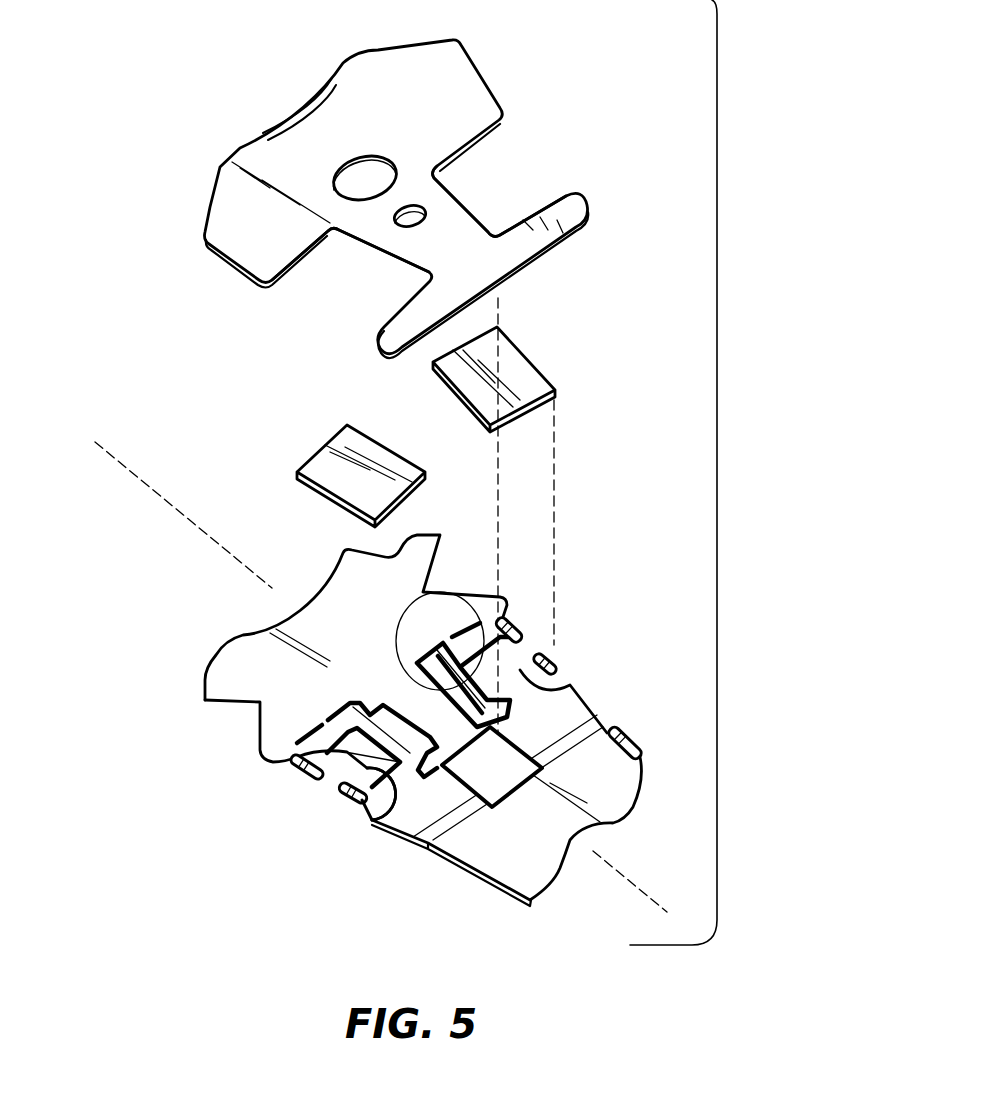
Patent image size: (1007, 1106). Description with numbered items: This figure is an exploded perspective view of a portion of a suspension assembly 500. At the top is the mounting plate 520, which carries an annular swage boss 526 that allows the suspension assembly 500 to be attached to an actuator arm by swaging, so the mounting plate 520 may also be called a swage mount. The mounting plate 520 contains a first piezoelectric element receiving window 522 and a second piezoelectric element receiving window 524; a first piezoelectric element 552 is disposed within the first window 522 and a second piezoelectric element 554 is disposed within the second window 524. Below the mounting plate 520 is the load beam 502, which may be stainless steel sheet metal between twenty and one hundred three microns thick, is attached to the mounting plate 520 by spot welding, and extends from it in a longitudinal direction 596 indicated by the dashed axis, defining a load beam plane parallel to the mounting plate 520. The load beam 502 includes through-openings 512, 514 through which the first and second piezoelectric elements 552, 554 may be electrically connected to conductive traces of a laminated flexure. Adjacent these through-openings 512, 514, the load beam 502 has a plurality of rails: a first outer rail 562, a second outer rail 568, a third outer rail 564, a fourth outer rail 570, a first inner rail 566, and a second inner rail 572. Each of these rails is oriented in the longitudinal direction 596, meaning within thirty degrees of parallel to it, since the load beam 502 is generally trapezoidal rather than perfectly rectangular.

The suspension assembly 500 is at (717, 53).
The load beam 502 is at (620, 740).
The through-opening 512 is at (370, 820).
The through-opening 514 is at (570, 685).
The mounting plate 520 is at (470, 95).
The first piezoelectric element receiving window 522 is at (347, 290).
The second piezoelectric element receiving window 524 is at (510, 178).
The annular swage boss 526 is at (333, 95).
The first piezoelectric element 552 is at (323, 467).
The second piezoelectric element 554 is at (518, 372).
The first outer rail 562 is at (307, 770).
The third outer rail 564 is at (350, 800).
The first inner rail 566 is at (297, 757).
The second outer rail 568 is at (514, 622).
The fourth outer rail 570 is at (550, 657).
The second inner rail 572 is at (437, 592).
The longitudinal direction 596 is at (137, 478).